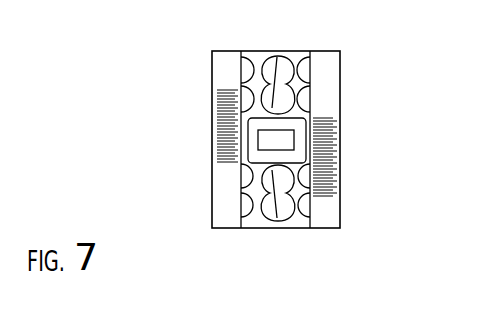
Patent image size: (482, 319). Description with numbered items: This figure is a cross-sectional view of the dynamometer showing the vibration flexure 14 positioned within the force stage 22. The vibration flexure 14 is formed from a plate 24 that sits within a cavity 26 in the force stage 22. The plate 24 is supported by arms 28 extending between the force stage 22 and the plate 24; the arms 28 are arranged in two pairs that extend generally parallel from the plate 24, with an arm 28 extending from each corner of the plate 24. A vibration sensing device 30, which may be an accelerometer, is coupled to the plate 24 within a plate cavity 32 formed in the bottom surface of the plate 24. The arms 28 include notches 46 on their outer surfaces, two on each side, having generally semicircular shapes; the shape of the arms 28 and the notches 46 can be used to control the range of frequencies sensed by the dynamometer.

The vibration flexure 14 is at (212, 177).
The force stage 22 is at (342, 137).
The plate 24 is at (212, 118).
The cavity 26 is at (312, 179).
The arms 28 is at (239, 84).
The vibration sensing device 30 is at (298, 172).
The plate cavity 32 is at (306, 119).
The notches 46 is at (281, 108).